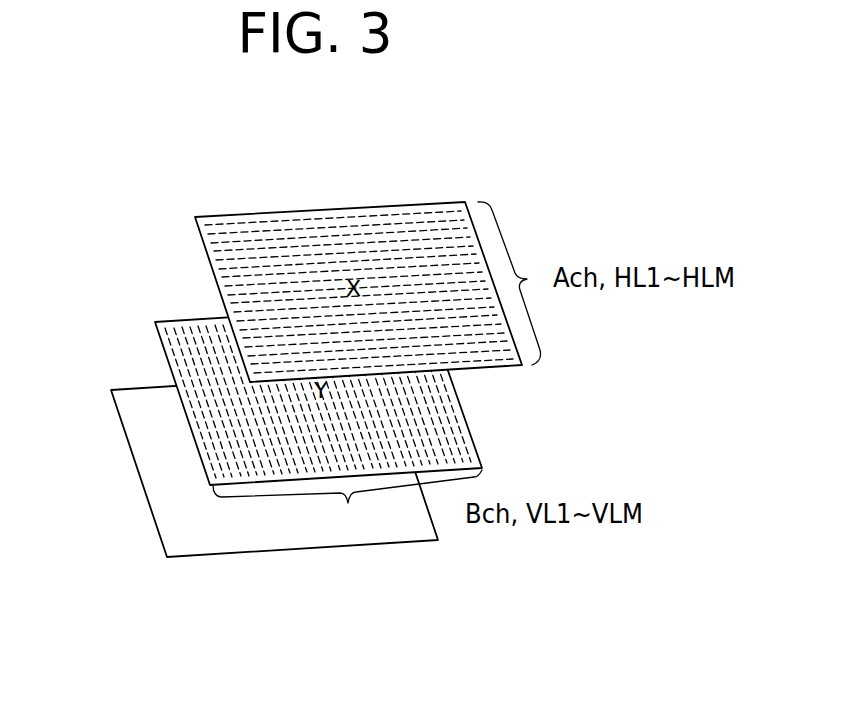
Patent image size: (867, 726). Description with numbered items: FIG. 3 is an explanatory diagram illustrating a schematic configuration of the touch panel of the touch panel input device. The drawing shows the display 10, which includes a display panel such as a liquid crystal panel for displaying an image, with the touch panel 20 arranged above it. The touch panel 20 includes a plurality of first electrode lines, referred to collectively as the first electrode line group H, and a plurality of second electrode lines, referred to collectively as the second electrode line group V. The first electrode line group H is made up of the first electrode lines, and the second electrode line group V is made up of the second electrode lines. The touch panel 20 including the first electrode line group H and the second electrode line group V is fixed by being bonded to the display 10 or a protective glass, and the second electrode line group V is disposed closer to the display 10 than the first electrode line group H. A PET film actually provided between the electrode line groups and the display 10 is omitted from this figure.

The display 10 is at (140, 389).
The touch panel 20 is at (416, 182).
The first electrode line group H is at (223, 216).
The second electrode line group V is at (184, 320).